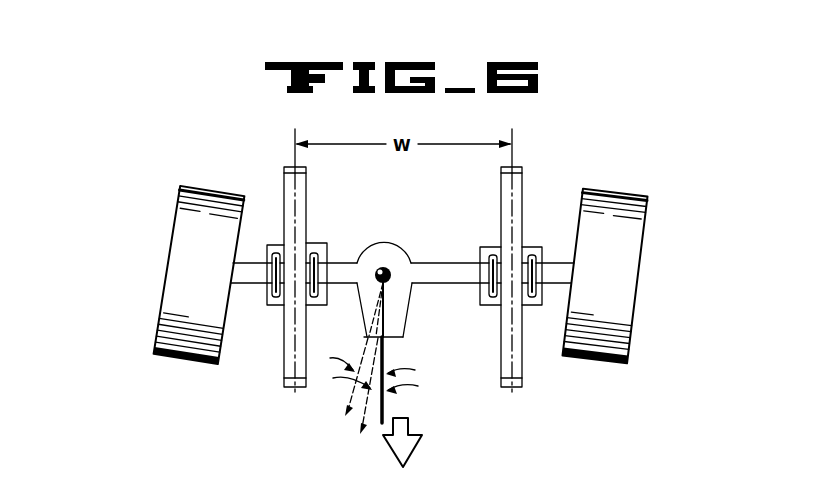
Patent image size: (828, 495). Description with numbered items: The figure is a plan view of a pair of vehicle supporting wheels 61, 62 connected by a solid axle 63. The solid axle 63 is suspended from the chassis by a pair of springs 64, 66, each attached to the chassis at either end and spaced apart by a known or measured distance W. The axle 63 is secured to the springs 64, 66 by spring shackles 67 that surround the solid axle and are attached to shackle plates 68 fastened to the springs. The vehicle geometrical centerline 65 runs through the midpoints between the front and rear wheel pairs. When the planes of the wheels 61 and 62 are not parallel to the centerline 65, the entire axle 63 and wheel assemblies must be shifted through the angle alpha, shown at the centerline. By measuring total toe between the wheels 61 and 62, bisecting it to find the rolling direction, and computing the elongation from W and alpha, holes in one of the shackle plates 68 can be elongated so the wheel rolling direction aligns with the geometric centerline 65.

The vehicle supporting wheel 61 is at (615, 303).
The vehicle supporting wheel 62 is at (183, 290).
The solid axle 63 is at (440, 267).
The spring 64 is at (523, 188).
The vehicle geometrical centerline 65 is at (385, 409).
The spring 66 is at (283, 183).
The spring shackle 67 is at (323, 245).
The shackle plate 68 is at (272, 305).